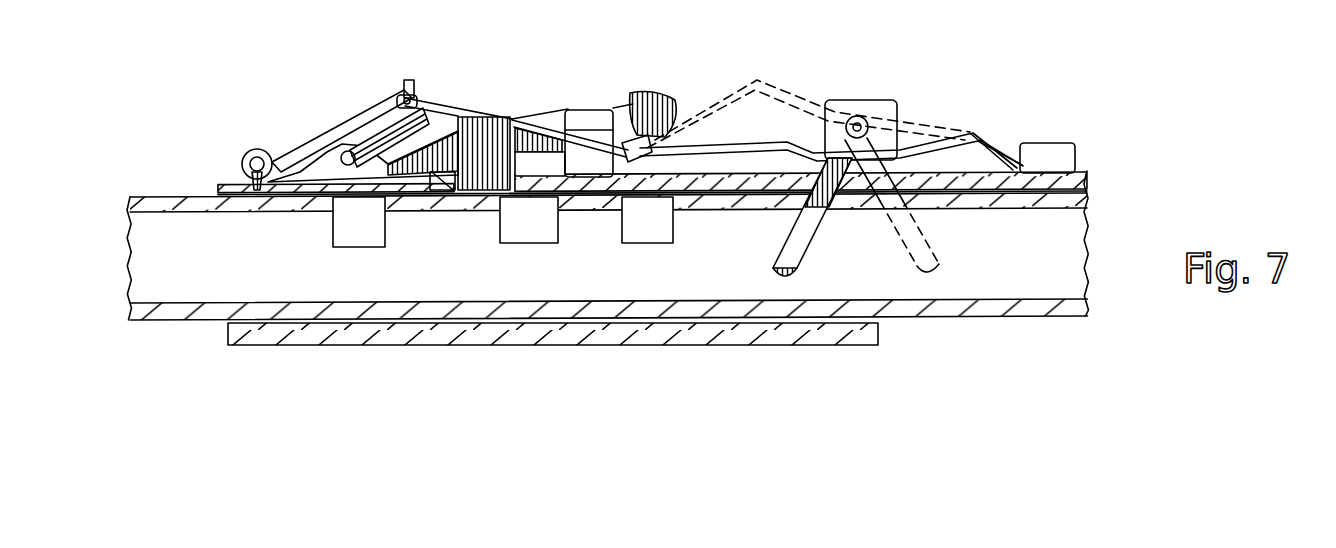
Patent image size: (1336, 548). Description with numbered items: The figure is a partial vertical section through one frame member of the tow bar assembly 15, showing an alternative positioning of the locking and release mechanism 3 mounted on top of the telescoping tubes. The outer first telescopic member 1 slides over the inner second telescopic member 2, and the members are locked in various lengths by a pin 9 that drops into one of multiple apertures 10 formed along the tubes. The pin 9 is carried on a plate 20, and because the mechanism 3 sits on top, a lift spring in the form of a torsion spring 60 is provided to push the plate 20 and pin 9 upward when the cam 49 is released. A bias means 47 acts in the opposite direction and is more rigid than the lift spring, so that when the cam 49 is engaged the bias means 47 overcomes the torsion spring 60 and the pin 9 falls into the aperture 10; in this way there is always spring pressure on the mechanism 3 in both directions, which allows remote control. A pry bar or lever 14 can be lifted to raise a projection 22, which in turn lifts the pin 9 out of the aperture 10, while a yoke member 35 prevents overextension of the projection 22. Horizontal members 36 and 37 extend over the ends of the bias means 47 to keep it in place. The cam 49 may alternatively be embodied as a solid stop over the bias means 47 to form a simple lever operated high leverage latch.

The first telescopic member 1 is at (167, 195).
The second telescopic member 2 is at (200, 325).
The locking and release mechanism 3 is at (430, 48).
The pin 9 is at (495, 138).
The aperture 10 is at (357, 206).
The pry bar or lever 14 is at (553, 106).
The tow bar assembly 15 is at (784, 240).
The plate 20 is at (430, 80).
The projection 22 is at (378, 100).
The yoke member 35 is at (594, 110).
The horizontal member 36 is at (630, 96).
The horizontal member 37 is at (1030, 143).
The bias means 47 is at (990, 132).
The cam 49 is at (847, 60).
The torsion spring 60 is at (314, 140).